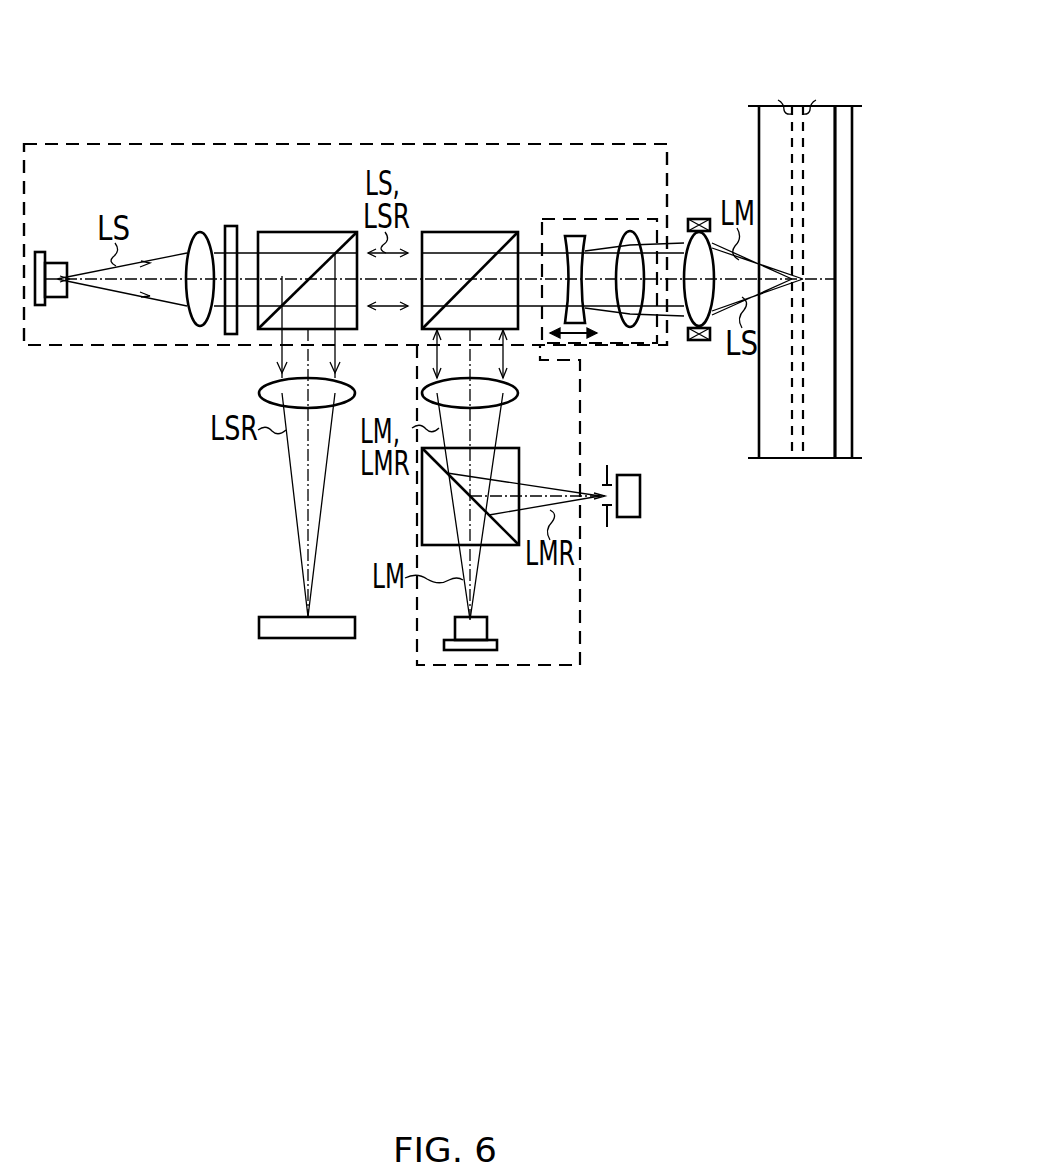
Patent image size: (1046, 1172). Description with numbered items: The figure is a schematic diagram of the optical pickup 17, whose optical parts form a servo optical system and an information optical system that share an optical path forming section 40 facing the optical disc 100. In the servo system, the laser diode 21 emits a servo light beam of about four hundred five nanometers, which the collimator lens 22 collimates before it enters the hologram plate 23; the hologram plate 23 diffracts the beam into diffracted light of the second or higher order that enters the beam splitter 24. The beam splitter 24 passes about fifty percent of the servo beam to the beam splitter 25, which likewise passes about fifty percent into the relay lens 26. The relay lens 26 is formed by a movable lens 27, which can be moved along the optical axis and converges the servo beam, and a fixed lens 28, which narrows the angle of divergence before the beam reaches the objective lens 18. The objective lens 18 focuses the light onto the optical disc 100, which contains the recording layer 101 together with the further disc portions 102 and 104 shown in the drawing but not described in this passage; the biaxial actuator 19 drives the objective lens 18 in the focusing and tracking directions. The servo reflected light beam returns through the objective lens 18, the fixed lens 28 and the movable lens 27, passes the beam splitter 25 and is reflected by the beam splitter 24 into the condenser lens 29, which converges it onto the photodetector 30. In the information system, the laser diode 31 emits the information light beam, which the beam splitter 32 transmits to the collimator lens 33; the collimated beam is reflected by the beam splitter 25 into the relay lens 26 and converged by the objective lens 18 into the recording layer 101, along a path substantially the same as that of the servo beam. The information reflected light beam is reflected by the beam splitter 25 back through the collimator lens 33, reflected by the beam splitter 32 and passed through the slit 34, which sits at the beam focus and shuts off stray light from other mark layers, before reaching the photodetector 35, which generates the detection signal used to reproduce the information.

The optical pickup 17 is at (142, 46).
The optical path forming section 40 is at (120, 143).
The optical disc 100 is at (772, 288).
The recording layer 101 is at (773, 458).
The disc surface / substrate 102 is at (848, 459).
The reflective layer 104 is at (836, 460).
The objective lens 18 is at (686, 232).
The biaxial actuator 19 is at (700, 342).
The laser diode 21 is at (57, 264).
The collimator lens 22 is at (200, 232).
The hologram plate 23 is at (231, 225).
The beam splitter 24 is at (308, 228).
The beam splitter 25 is at (468, 228).
The relay lens 26 is at (600, 218).
The movable lens 27 is at (574, 235).
The fixed lens 28 is at (630, 230).
The condenser lens 29 is at (260, 392).
The photodetector 30 is at (259, 631).
The laser diode 31 is at (488, 626).
The beam splitter 32 is at (511, 457).
The collimator lens 33 is at (510, 393).
The slit 34 is at (605, 464).
The photodetector 35 is at (636, 474).